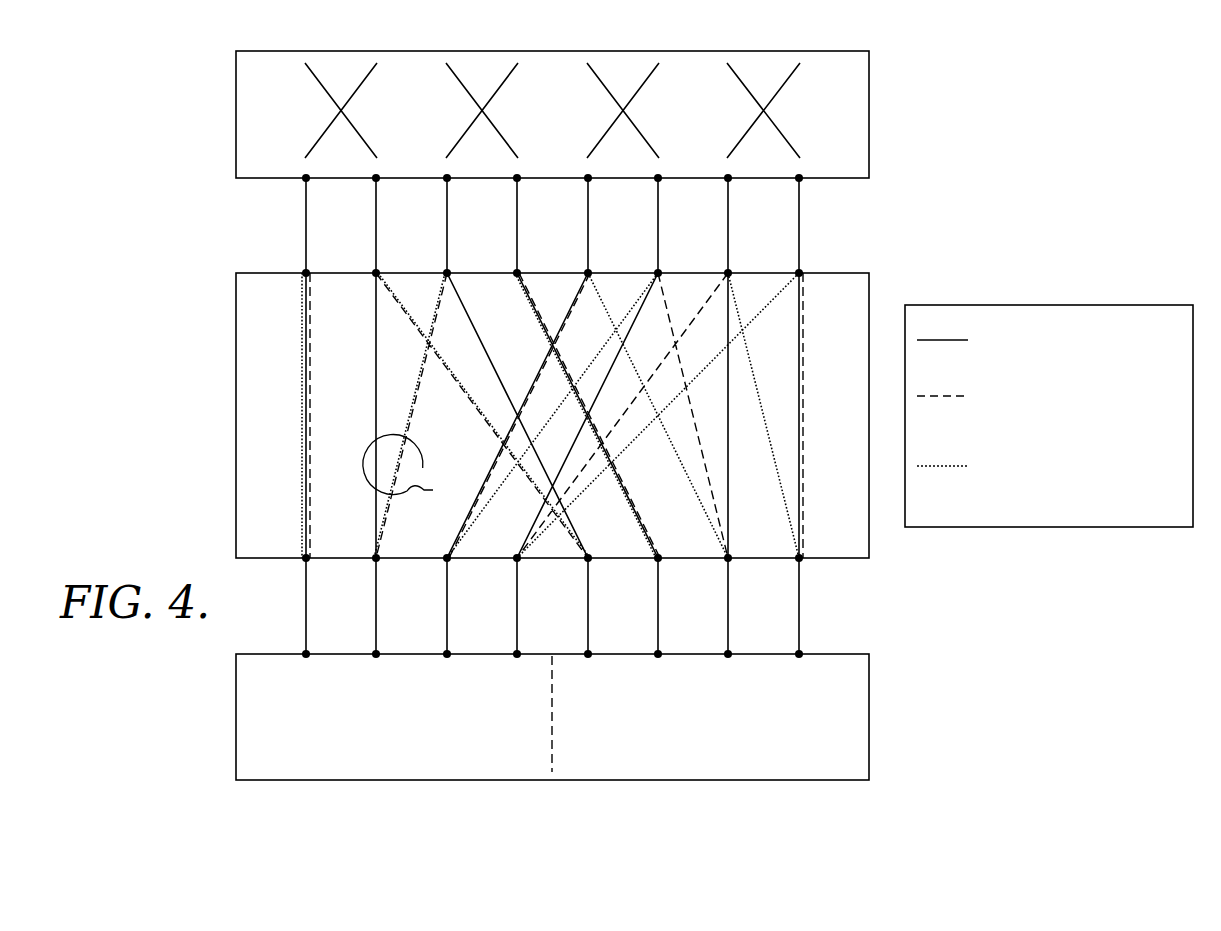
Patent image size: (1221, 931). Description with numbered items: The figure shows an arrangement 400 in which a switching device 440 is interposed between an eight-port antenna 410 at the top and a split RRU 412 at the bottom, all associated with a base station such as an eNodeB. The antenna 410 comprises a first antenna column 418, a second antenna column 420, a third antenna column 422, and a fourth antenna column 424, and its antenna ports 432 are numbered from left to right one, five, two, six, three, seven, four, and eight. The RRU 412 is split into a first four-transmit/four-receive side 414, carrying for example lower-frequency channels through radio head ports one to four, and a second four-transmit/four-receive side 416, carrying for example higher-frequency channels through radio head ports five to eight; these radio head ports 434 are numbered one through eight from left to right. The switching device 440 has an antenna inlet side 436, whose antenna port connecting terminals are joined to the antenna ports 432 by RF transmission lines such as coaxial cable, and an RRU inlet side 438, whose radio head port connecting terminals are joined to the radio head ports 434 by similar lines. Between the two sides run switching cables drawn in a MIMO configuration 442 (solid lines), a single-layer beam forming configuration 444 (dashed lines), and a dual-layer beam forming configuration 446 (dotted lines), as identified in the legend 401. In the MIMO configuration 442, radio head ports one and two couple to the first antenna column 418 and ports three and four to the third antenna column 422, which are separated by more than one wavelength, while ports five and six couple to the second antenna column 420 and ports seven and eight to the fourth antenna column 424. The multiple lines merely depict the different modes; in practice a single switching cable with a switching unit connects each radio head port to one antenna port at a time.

The switching arrangement 400 is at (132, 108).
The legend 401 is at (1049, 400).
The 8-port antenna 410 is at (579, 91).
The split RRU 412 is at (554, 701).
The first 4T/4R side 414 is at (236, 722).
The second 4T/4R side 416 is at (869, 723).
The first antenna column 418 is at (302, 48).
The second antenna column 420 is at (523, 48).
The third antenna column 422 is at (664, 48).
The fourth antenna column 424 is at (805, 48).
The antenna ports 432 is at (848, 192).
The radio head ports 434 is at (847, 618).
The antenna inlet side 436 is at (845, 258).
The RRU inlet side 438 is at (846, 571).
The switching device 440 is at (218, 273).
The MIMO configuration 442 is at (1048, 350).
The single-layer beam forming configuration 444 is at (1038, 416).
The dual-layer beam forming configuration 446 is at (1031, 486).